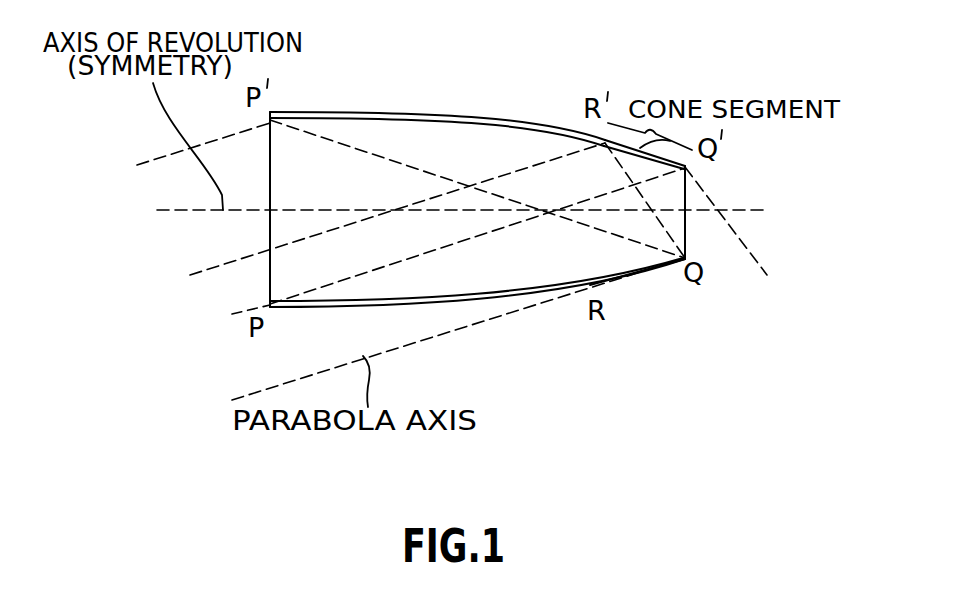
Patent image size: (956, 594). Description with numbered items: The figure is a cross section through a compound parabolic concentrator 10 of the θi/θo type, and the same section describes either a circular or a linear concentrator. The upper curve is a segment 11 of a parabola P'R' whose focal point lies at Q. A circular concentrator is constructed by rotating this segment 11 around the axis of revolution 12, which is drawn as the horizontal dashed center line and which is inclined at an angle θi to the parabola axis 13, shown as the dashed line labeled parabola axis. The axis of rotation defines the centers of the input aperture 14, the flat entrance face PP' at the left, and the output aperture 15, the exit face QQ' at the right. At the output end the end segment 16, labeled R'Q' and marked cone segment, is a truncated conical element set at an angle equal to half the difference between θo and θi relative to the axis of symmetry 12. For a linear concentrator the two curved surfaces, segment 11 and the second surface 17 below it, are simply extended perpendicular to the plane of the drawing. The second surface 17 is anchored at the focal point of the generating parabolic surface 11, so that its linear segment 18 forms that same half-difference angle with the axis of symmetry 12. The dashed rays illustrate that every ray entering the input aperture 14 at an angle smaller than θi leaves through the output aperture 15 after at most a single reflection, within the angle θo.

The compound parabolic concentrator 10 is at (412, 90).
The parabola segment 11 is at (315, 112).
The axis of revolution 12 is at (168, 210).
The parabola axis 13 is at (225, 315).
The input aperture 14 is at (268, 230).
The output aperture 15 is at (687, 231).
The end segment 16 is at (690, 152).
The second surface 17 is at (503, 290).
The linear segment 18 is at (632, 278).